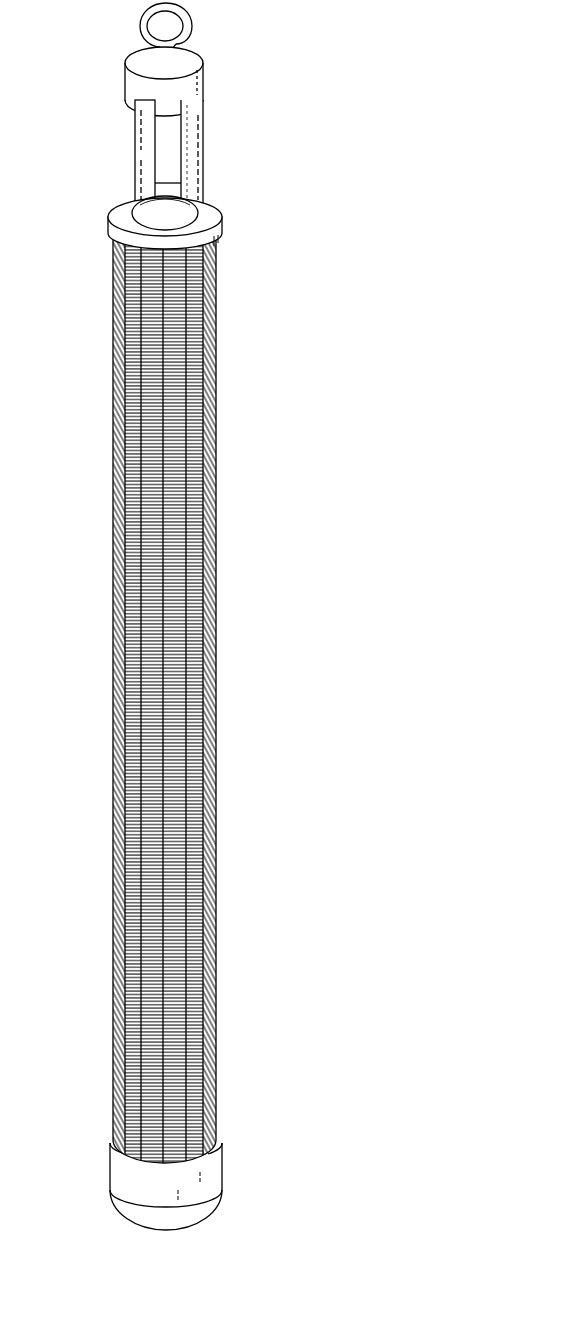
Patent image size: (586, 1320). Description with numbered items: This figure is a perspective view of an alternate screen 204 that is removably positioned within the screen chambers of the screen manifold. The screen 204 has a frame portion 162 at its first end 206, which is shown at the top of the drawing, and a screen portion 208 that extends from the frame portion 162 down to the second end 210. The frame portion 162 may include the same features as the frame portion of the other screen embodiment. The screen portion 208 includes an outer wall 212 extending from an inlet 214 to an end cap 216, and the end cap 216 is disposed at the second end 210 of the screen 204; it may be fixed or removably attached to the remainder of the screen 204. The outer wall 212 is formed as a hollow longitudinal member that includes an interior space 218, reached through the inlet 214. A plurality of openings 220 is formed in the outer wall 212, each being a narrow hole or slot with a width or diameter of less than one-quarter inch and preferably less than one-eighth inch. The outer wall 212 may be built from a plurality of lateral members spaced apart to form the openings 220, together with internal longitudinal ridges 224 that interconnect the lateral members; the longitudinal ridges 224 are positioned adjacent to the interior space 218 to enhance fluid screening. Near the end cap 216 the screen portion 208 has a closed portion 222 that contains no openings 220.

The screen 204 is at (342, 252).
The first end 206 is at (199, 53).
The frame portion 162 is at (212, 133).
The inlet 214 is at (168, 228).
The interior space 218 is at (150, 222).
The screen portion 208 is at (224, 487).
The outer wall 212 is at (215, 653).
The openings 220 is at (124, 417).
The longitudinal ridges 224 is at (163, 770).
The closed portion 222 is at (215, 1153).
The second end 210 is at (200, 1213).
The end cap 216 is at (130, 1207).